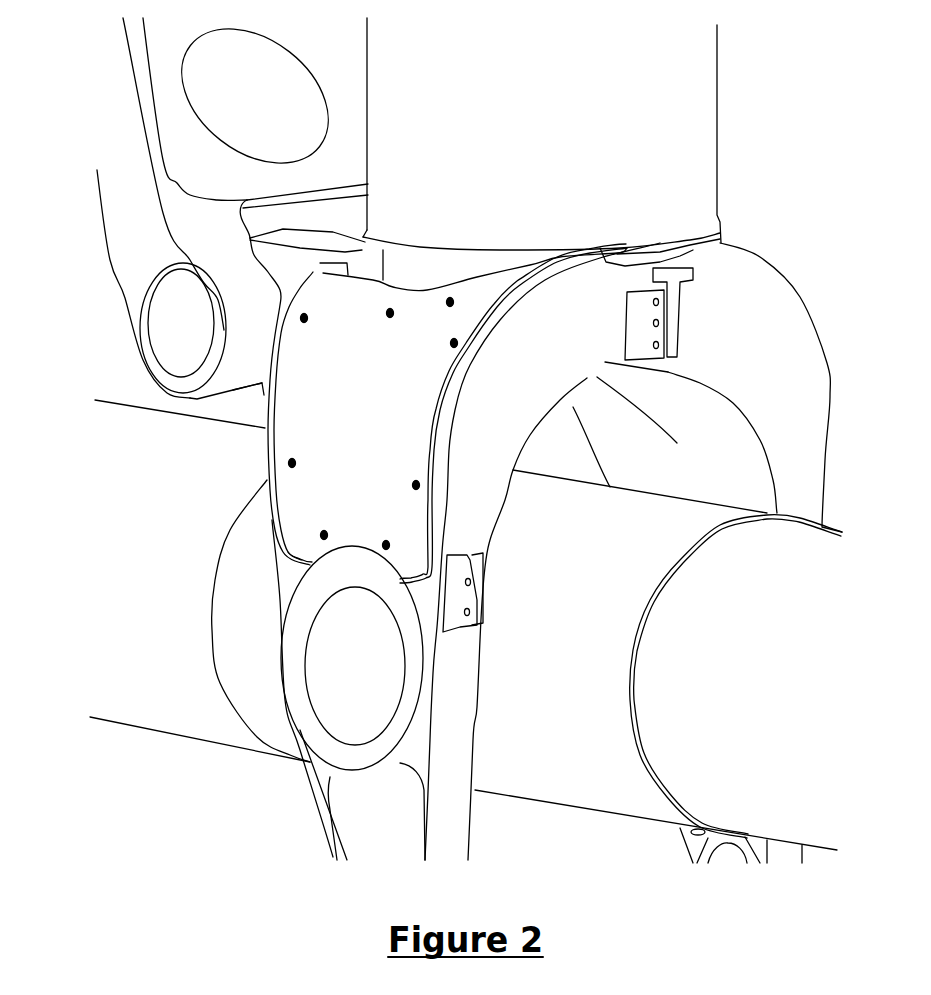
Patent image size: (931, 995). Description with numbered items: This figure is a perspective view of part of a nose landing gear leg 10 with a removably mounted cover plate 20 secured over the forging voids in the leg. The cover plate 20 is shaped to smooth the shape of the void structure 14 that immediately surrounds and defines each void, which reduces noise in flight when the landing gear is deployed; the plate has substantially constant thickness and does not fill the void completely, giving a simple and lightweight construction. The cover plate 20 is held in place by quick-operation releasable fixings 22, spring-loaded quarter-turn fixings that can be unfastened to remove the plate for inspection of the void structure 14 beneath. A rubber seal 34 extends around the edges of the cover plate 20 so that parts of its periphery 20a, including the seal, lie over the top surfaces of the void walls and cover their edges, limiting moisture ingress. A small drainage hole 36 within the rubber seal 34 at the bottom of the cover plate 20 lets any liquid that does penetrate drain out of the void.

The nose landing gear leg 10 is at (687, 173).
The void structure 14 is at (476, 265).
The cover plate 20 is at (383, 418).
The periphery of the cover plate 20a is at (290, 552).
The quick-operation releasable fixings 22 is at (387, 320).
The rubber seal 34 is at (270, 410).
The drainage hole 36 is at (300, 558).